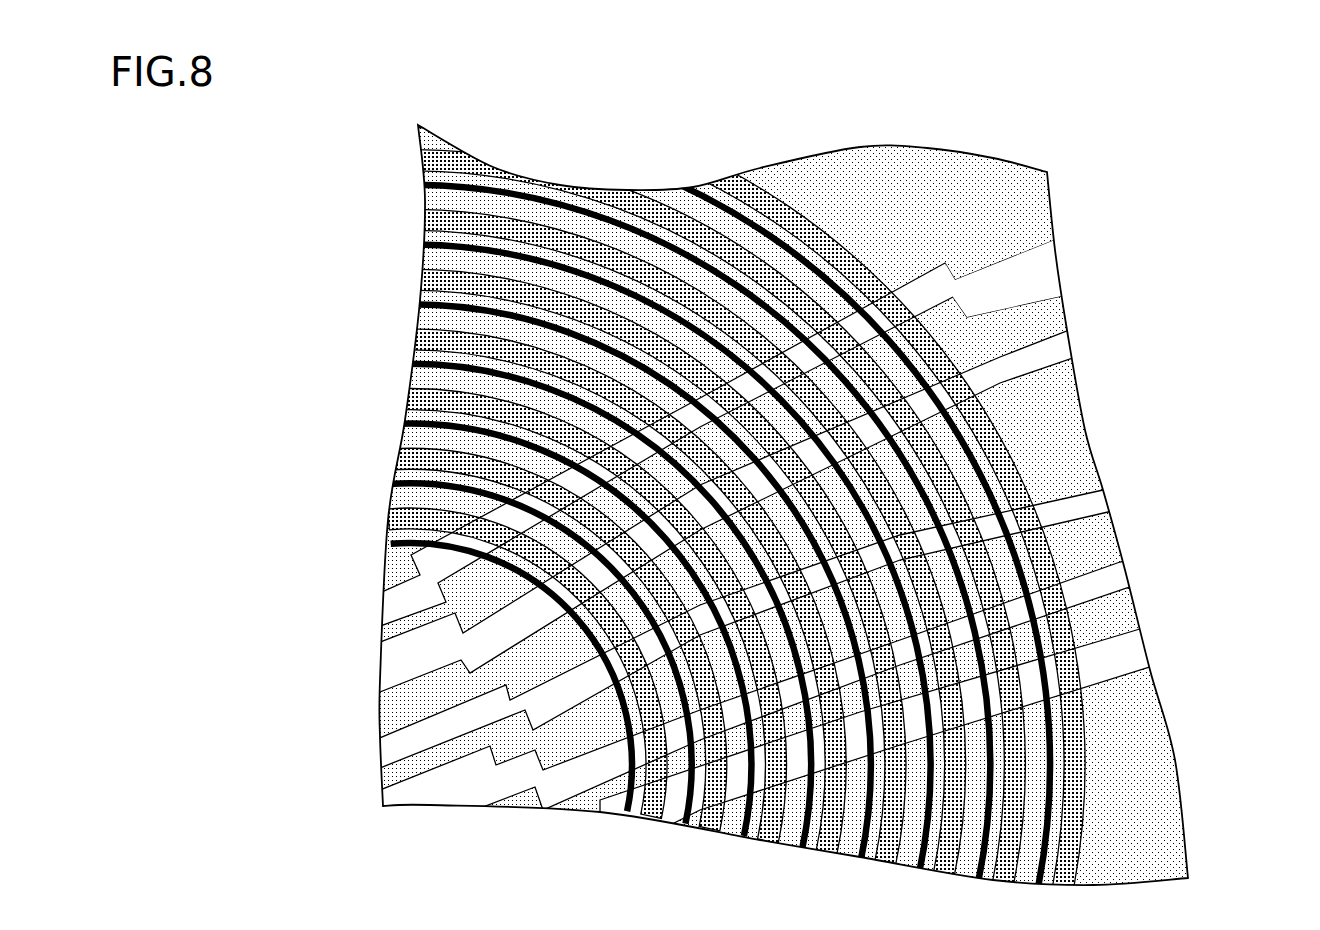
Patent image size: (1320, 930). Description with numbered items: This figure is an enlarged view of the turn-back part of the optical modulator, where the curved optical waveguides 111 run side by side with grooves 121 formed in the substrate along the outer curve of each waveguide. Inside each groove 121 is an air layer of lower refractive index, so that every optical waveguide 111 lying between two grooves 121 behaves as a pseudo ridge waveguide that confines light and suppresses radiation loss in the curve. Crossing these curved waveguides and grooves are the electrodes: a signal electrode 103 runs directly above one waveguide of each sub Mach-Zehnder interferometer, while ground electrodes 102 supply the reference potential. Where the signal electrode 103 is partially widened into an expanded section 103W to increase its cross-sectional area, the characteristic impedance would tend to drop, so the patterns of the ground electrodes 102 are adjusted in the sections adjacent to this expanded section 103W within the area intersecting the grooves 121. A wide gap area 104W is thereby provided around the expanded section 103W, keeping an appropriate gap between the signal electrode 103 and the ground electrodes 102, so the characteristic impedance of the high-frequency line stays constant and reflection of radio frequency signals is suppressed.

The ground electrode 102 is at (1148, 768).
The signal electrode 103 is at (1012, 297).
The expanded section of the signal electrode 103W is at (940, 305).
The wide gap area 104W is at (992, 383).
The optical waveguide 111 is at (710, 190).
The groove 121 is at (1030, 483).